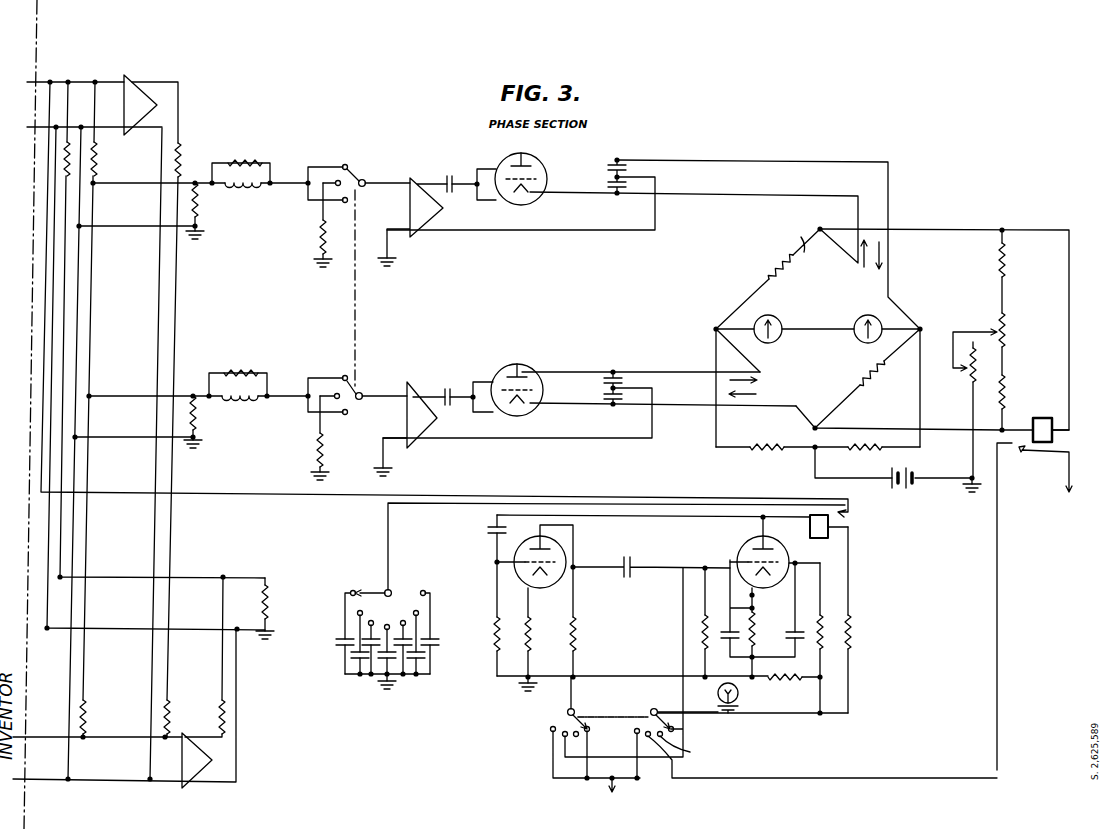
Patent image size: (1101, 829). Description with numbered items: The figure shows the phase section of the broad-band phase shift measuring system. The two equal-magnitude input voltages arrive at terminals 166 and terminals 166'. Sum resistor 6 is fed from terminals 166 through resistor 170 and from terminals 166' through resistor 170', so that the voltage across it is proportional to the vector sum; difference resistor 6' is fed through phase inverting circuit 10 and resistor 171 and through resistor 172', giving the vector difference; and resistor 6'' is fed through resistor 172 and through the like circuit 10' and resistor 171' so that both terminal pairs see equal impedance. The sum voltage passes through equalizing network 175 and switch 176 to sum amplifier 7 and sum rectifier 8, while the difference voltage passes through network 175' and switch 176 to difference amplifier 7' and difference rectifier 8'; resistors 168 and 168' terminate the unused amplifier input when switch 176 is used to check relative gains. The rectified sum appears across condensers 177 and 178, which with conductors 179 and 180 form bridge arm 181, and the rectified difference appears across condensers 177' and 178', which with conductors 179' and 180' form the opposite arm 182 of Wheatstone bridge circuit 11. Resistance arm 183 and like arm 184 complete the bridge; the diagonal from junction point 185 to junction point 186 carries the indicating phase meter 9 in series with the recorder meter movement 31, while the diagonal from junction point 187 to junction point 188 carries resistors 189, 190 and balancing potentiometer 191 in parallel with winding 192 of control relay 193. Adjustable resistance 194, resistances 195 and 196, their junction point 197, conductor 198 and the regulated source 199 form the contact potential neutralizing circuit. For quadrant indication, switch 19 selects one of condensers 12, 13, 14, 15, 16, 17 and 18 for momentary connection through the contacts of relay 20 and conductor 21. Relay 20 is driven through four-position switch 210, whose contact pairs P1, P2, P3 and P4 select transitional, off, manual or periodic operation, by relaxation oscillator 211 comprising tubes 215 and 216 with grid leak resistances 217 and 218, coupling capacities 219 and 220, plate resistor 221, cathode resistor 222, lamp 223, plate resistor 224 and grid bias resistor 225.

The sum resistor 6 is at (205, 211).
The difference resistor 6' is at (205, 422).
The resistor 6'' is at (275, 608).
The sum amplifier 7 is at (427, 211).
The difference amplifier 7' is at (423, 422).
The sum rectifier 8 is at (518, 179).
The difference rectifier 8' is at (518, 390).
The indicating phase meter 9 is at (861, 343).
The phase inverting amplifier 10 is at (148, 105).
The phase inverting circuit 10' is at (208, 760).
The bridge circuit 11 is at (768, 279).
The condenser 12 is at (338, 643).
The condenser 13 is at (352, 656).
The condenser 14 is at (373, 636).
The condenser 15 is at (381, 672).
The condenser 16 is at (396, 636).
The condenser 17 is at (421, 672).
The condenser 18 is at (432, 646).
The switch 19 is at (374, 590).
The relay 20 is at (835, 525).
The conductor 21 is at (300, 503).
The meter movement of phase recorder 31 is at (778, 343).
The terminals 166 is at (81, 104).
The terminals 166' is at (124, 706).
The resistor 168 is at (303, 225).
The resistor 168' is at (302, 438).
The resistor 170 is at (112, 162).
The resistor 170' is at (104, 717).
The resistor 171 is at (176, 129).
The resistor 171' is at (203, 657).
The resistor 172 is at (98, 159).
The resistor 172' is at (187, 457).
The network 175 is at (260, 165).
The network 175' is at (258, 372).
The switch 176 is at (345, 165).
The condenser 177 is at (636, 159).
The condenser 177' is at (596, 369).
The condenser 178 is at (601, 199).
The condenser 178' is at (599, 408).
The conductor 179 is at (768, 233).
The conductor 179' is at (641, 360).
The conductor 180 is at (694, 227).
The conductor 180' is at (663, 419).
The bridge arm 181 is at (884, 245).
The bridge arm 182 is at (759, 391).
The resistance arm 183 is at (768, 266).
The resistance arm 184 is at (894, 378).
The junction point 185 is at (924, 327).
The junction point 186 is at (716, 327).
The junction point 187 is at (826, 221).
The junction point 188 is at (815, 424).
The resistor 189 is at (1006, 263).
The resistor 190 is at (1008, 392).
The balancing potentiometer 191 is at (1008, 332).
The relay winding 192 is at (1043, 409).
The control relay 193 is at (1024, 454).
The adjustable resistance 194 is at (968, 380).
The resistance 195 is at (858, 452).
The resistance 196 is at (761, 445).
The junction point 197 is at (812, 452).
The conductor 198 is at (814, 477).
The direct current source 199 is at (918, 471).
The four-position switch 210 is at (611, 711).
The relaxation oscillator 211 is at (660, 537).
The vacuum tube 215 is at (529, 545).
The vacuum tube 216 is at (737, 549).
The grid leak resistance 217 is at (494, 626).
The grid leak resistance 218 is at (695, 628).
The coupling capacity 219 is at (488, 530).
The coupling capacity 220 is at (627, 580).
The plate resistor 221 is at (571, 627).
The cathode lead resistor 222 is at (533, 640).
The lamp 223 is at (738, 695).
The plate resistor 224 is at (855, 632).
The grid bias resistor 225 is at (757, 634).
The contact pair P1 is at (697, 730).
The contact pair P2 is at (574, 737).
The contact pair P3 is at (563, 736).
The contact pair P4 is at (550, 729).